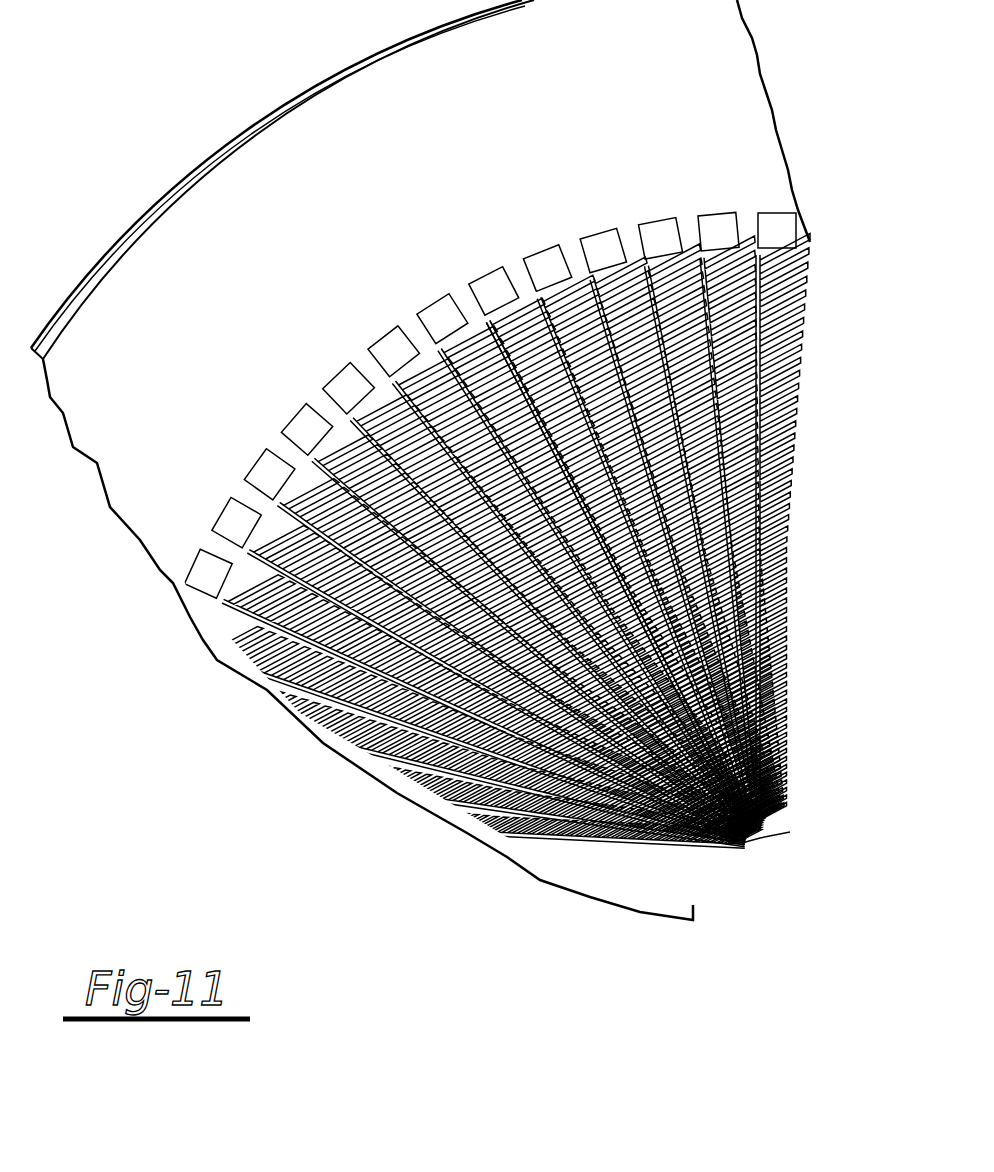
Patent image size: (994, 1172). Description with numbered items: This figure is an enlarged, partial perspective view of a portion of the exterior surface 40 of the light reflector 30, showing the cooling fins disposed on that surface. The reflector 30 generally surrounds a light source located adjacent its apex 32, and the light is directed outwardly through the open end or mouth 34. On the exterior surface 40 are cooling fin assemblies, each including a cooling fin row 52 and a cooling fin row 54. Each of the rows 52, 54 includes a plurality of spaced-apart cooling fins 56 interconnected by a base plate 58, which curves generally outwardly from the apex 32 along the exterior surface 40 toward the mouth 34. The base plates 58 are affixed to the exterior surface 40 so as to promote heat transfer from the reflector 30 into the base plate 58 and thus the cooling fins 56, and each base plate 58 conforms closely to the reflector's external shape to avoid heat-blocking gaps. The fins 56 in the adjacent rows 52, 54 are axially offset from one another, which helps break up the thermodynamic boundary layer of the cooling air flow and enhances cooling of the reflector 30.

The light reflector 30 is at (467, 460).
The apex 32 is at (761, 844).
The mouth 34 is at (287, 100).
The exterior surface 40 is at (727, 76).
The cooling fin row 52 is at (541, 294).
The cooling fin row 54 is at (590, 267).
The cooling fins 56 is at (404, 368).
The base plate 58 is at (457, 325).